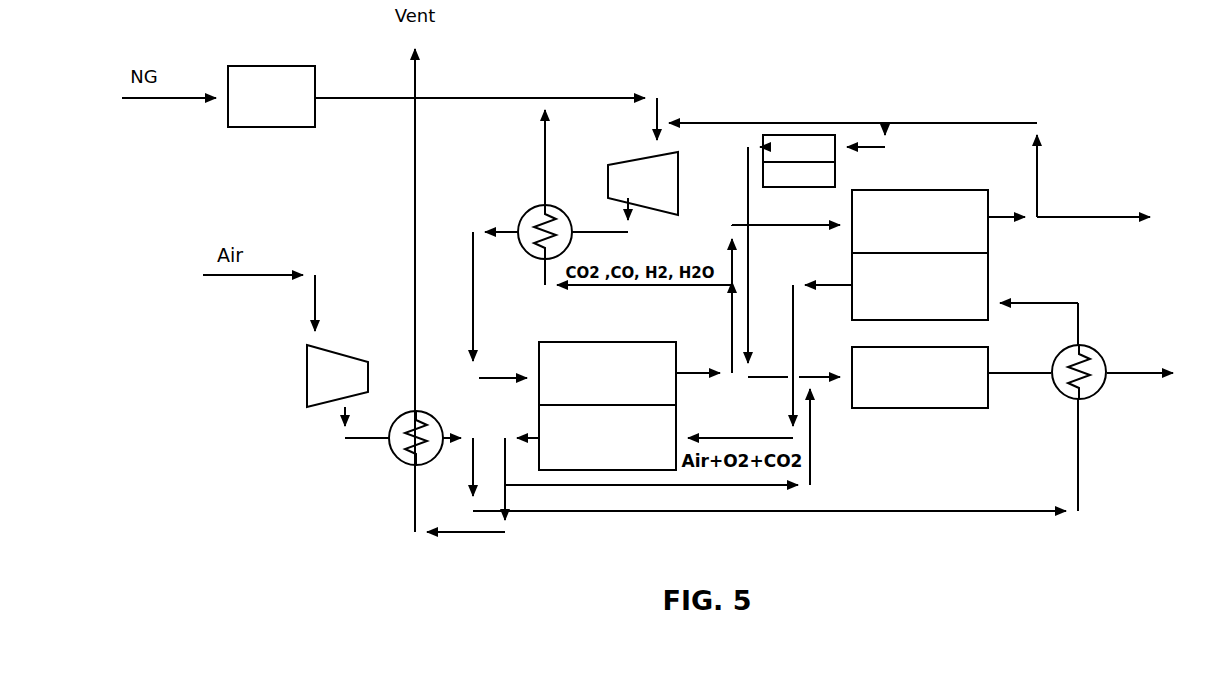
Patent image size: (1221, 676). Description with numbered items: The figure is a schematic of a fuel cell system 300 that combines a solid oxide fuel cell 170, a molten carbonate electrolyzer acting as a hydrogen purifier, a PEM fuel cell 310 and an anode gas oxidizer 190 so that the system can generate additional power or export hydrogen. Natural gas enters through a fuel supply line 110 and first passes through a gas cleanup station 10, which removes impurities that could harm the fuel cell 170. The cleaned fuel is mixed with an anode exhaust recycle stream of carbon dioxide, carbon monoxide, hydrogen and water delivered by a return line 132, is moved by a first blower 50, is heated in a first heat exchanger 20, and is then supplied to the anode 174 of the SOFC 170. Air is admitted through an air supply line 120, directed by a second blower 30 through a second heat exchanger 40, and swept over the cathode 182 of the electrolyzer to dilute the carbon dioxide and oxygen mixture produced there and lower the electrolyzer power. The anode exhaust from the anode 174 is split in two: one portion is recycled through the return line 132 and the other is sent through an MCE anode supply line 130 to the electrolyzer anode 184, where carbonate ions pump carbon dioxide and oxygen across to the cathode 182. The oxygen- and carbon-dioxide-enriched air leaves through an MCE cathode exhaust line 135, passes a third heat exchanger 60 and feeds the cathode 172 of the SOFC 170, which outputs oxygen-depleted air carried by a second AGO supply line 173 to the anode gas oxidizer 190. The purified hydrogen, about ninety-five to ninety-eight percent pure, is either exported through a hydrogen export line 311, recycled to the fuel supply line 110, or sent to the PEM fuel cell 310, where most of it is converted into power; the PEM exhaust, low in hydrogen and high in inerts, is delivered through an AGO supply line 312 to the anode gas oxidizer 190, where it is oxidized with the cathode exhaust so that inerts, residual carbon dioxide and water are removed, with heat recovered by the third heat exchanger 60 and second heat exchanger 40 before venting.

The fuel cell system 300 is at (730, 86).
The fuel supply line 110 is at (165, 101).
The gas cleanup station 10 is at (271, 128).
The first blower 50 is at (621, 162).
The first heat exchanger 20 is at (526, 217).
The PEM fuel cell 310 is at (840, 177).
The anode 184 is at (972, 190).
The cathode 182 is at (990, 292).
The MCE anode supply line 130 is at (783, 228).
The hydrogen export line 311 is at (1137, 222).
The air supply line 120 is at (230, 279).
The fuel cell 170 is at (569, 385).
The anode 174 is at (539, 363).
The cathode 172 is at (539, 415).
The return line 132 is at (628, 287).
The MCE cathode exhaust line 135 is at (797, 336).
The second blower 30 is at (305, 375).
The AGO supply line 312 is at (763, 385).
The third heat exchanger 60 is at (1100, 359).
The anode gas oxidizer 190 is at (990, 406).
The second AGO supply line 173 is at (812, 462).
The second heat exchanger 40 is at (392, 455).